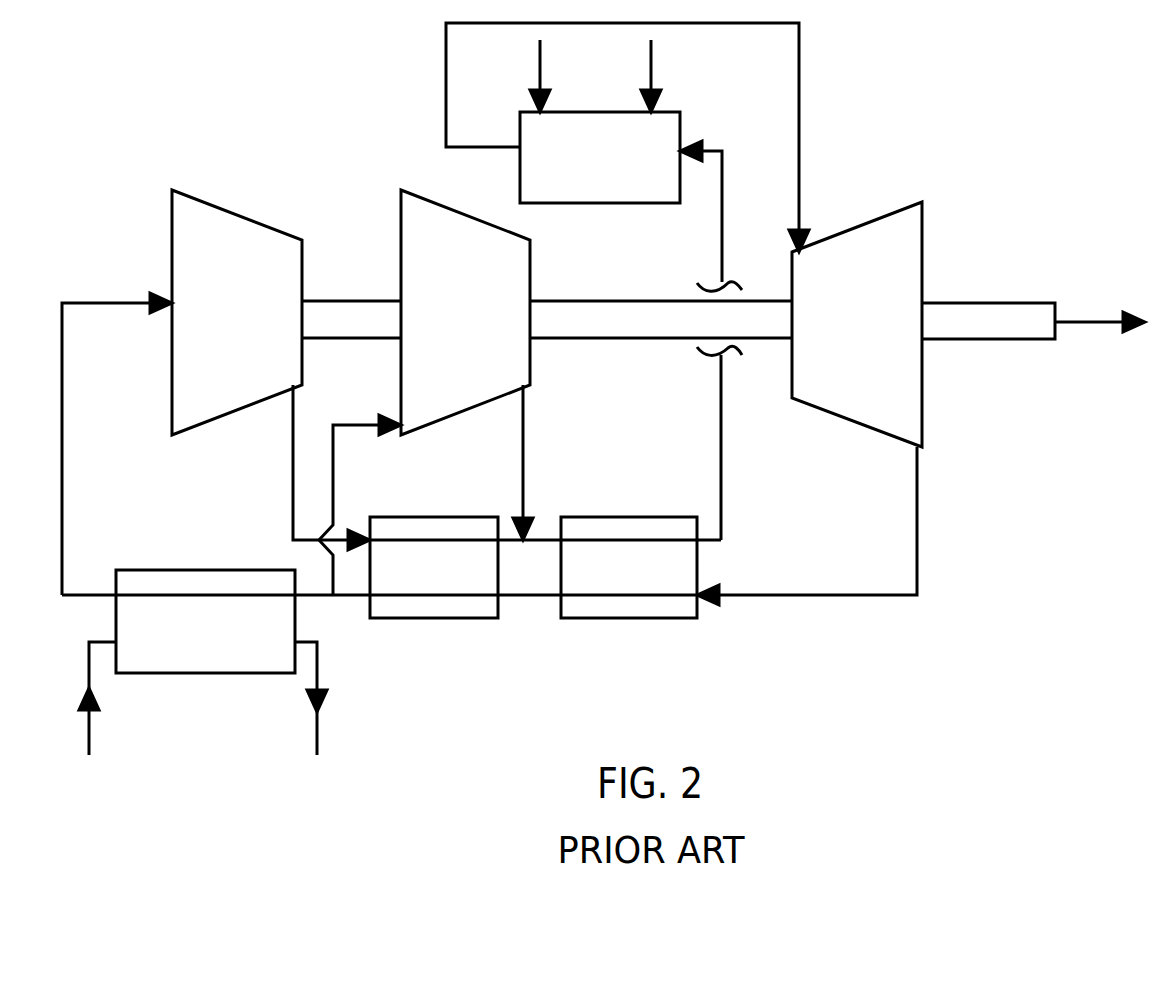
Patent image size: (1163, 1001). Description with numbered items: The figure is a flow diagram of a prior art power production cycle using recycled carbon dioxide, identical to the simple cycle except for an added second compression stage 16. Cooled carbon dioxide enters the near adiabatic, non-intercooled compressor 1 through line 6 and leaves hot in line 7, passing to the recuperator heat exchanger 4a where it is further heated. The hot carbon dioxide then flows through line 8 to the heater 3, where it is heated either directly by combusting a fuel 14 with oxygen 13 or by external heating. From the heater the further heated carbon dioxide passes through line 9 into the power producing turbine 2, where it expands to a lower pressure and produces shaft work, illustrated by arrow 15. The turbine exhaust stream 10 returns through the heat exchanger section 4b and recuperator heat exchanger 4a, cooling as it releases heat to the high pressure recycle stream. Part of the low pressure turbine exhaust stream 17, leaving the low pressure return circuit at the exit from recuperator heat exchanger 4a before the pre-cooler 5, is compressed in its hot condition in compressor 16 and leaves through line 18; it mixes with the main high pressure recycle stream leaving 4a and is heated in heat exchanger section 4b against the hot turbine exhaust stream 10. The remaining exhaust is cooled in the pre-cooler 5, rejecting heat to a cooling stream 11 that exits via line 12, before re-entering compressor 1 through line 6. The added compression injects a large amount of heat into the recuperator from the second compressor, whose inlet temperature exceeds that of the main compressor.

The compressor 1 is at (237, 312).
The second compression stage 16 is at (465, 312).
The power producing turbine 2 is at (857, 324).
The heater 3 is at (600, 157).
The recuperator heat exchanger 4a is at (434, 567).
The heat exchanger section 4b is at (629, 567).
The pre-cooler 5 is at (205, 621).
The line 6 is at (379, 444).
The line 7 is at (507, 467).
The line 8 is at (711, 340).
The line 9 is at (631, 137).
The turbine exhaust stream 10 is at (823, 526).
The cooling stream 11 is at (100, 698).
The line 12 is at (322, 698).
The oxygen 13 is at (662, 76).
The fuel 14 is at (551, 76).
The shaft work 15 is at (1033, 325).
The low pressure turbine exhaust stream 17 is at (360, 505).
The line 18 is at (534, 462).